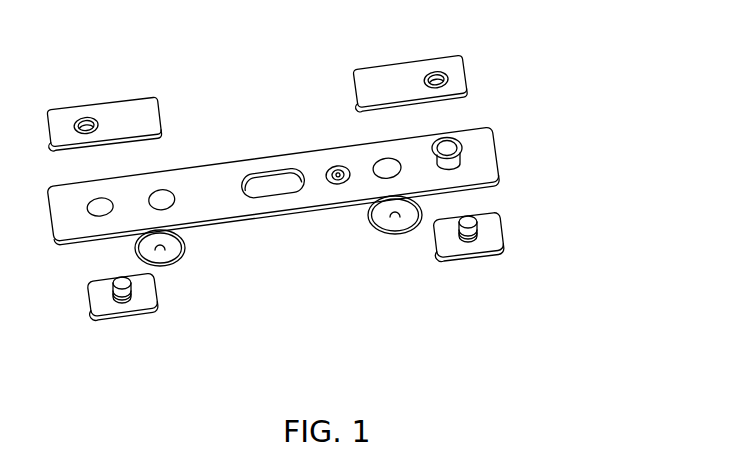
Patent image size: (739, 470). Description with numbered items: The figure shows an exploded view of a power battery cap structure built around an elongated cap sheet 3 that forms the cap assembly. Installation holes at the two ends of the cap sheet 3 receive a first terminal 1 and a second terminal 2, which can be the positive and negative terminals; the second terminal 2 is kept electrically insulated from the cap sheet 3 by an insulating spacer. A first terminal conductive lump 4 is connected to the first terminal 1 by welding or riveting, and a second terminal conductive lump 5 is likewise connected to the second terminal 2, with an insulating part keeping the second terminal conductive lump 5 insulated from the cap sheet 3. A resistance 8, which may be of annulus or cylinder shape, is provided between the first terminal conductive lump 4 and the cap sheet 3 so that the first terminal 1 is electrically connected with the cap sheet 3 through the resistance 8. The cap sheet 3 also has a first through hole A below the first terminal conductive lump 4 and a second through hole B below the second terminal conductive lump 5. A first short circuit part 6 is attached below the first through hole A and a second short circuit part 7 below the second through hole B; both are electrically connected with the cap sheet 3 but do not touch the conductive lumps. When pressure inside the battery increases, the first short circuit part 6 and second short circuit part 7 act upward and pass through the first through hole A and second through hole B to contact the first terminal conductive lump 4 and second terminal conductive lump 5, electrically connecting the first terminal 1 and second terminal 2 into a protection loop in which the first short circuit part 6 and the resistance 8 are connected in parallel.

The first terminal 1 is at (510, 256).
The second terminal 2 is at (142, 325).
The cap sheet 3 is at (273, 196).
The first terminal conductive lump 4 is at (448, 56).
The second terminal conductive lump 5 is at (123, 88).
The first short circuit part 6 is at (361, 257).
The second short circuit part 7 is at (197, 275).
The resistance 8 is at (514, 127).
The first through hole A is at (347, 141).
The second through hole B is at (192, 156).